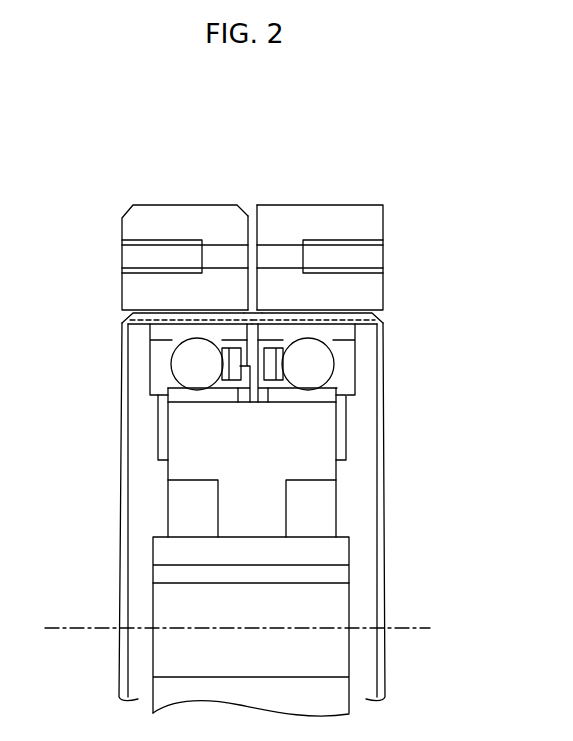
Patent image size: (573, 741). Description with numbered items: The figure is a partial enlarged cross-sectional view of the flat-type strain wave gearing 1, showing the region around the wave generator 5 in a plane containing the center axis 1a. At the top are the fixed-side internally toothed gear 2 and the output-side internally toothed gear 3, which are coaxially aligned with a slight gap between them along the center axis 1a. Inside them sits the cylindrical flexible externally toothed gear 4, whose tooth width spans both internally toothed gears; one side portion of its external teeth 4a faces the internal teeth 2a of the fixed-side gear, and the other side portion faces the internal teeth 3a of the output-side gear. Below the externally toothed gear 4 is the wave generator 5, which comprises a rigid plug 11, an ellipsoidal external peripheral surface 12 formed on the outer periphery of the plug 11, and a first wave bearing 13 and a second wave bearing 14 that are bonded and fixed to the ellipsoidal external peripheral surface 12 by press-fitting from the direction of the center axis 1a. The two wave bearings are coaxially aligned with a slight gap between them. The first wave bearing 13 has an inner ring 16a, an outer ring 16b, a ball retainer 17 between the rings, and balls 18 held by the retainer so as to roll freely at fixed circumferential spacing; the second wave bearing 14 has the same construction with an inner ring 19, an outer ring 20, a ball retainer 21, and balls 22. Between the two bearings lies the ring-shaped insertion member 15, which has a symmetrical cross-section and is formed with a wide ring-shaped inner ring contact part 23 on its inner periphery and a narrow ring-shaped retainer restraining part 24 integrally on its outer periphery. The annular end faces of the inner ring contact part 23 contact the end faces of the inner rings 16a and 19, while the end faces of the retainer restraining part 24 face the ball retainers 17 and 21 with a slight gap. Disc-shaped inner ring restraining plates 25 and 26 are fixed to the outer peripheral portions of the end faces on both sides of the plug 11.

The flat-type strain wave gearing 1 is at (428, 188).
The center axis 1a is at (415, 632).
The fixed-side internally toothed gear 2 is at (317, 203).
The internal teeth 2a is at (310, 318).
The output-side internally toothed gear 3 is at (165, 203).
The internal teeth 3a is at (197, 318).
The flexible externally toothed gear 4 is at (245, 316).
The external teeth 4a is at (262, 320).
The wave generator 5 is at (357, 578).
The rigid plug 11 is at (350, 549).
The ellipsoidal external peripheral surface 12 is at (283, 398).
The first wave bearing 13 is at (440, 290).
The second wave bearing 14 is at (66, 290).
The insertion member 15 is at (66, 460).
The inner ring 16a is at (330, 396).
The outer ring 16b is at (343, 333).
The ball retainer 17 is at (275, 364).
The balls 18 is at (318, 371).
The inner ring 19 is at (177, 395).
The outer ring 20 is at (160, 333).
The ball retainer 21 is at (230, 365).
The balls 22 is at (186, 371).
The inner ring contact part 23 is at (250, 398).
The retainer restraining part 24 is at (250, 377).
The inner ring restraining plate 25 is at (342, 422).
The inner ring restraining plate 26 is at (163, 422).